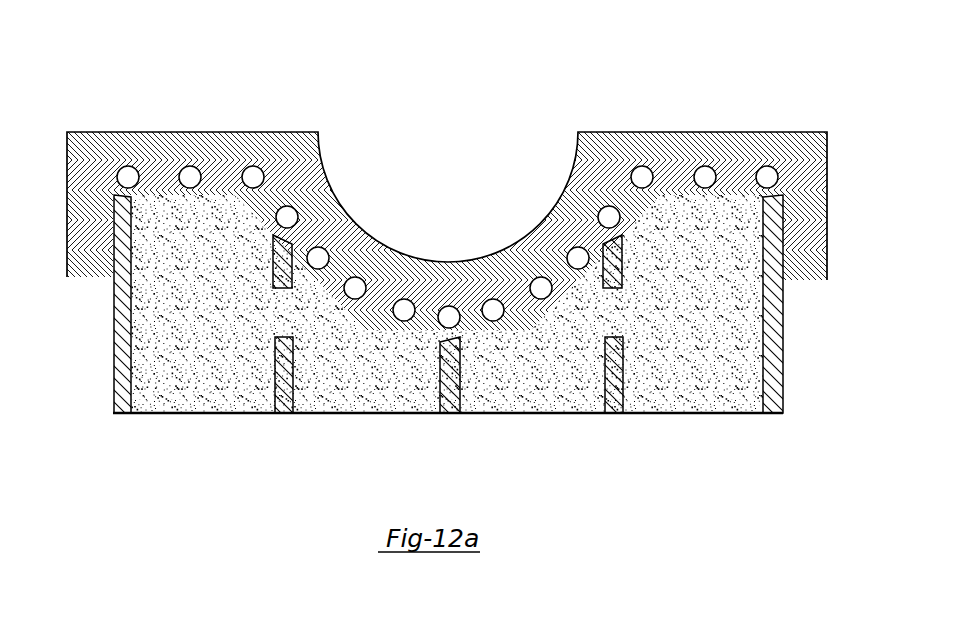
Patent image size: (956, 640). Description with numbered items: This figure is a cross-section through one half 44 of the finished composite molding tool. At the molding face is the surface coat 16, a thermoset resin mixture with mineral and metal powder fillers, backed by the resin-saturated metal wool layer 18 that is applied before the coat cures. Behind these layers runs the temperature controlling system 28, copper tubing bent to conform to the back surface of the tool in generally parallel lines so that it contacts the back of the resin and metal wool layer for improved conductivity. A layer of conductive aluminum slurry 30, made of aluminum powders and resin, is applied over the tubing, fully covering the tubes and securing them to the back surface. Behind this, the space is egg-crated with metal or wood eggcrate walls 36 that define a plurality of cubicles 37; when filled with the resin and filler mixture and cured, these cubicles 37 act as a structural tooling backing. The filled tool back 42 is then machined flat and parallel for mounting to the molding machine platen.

The surface coat 16 is at (728, 142).
The metal wool layer 18 is at (160, 150).
The temperature controlling system 28 is at (772, 177).
The conductive aluminum slurry layer 30 is at (282, 176).
The eggcrate walls 36 is at (283, 413).
The cubicles 37 is at (173, 414).
The filled tool back 42 is at (710, 413).
The half of the molding tool 44 is at (463, 260).